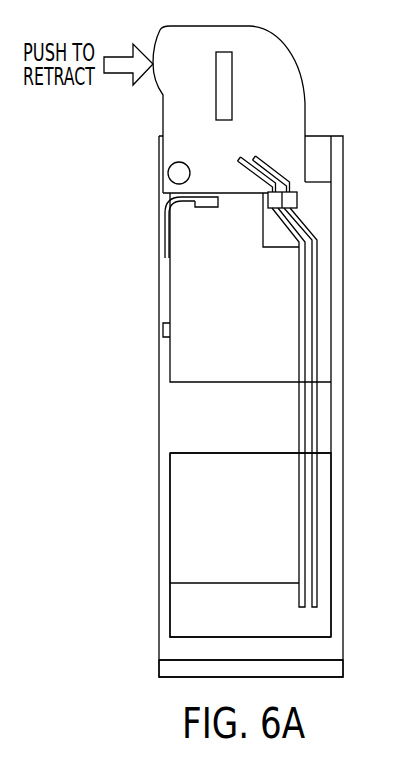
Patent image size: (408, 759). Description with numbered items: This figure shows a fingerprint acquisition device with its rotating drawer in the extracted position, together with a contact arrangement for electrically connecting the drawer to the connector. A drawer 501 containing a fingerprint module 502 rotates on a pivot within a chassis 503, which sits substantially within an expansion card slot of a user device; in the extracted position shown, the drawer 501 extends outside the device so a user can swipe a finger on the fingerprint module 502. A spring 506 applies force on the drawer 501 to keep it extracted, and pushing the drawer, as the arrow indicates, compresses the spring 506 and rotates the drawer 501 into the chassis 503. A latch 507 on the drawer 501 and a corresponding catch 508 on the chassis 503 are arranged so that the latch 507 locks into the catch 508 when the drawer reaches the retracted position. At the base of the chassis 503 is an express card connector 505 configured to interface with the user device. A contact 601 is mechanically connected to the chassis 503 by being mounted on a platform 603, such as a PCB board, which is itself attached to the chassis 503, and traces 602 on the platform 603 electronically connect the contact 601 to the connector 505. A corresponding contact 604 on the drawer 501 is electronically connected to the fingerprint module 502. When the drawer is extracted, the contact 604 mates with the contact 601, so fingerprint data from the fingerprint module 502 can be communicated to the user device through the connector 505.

The drawer 501 is at (281, 60).
The fingerprint module 502 is at (228, 98).
The chassis 503 is at (159, 457).
The express card connector 505 is at (318, 670).
The spring 506 is at (163, 222).
The latch 507 is at (318, 202).
The catch 508 is at (163, 330).
The contact 601 is at (268, 204).
The traces 602 is at (303, 344).
The platform 603 is at (318, 616).
The corresponding contact 604 is at (278, 182).